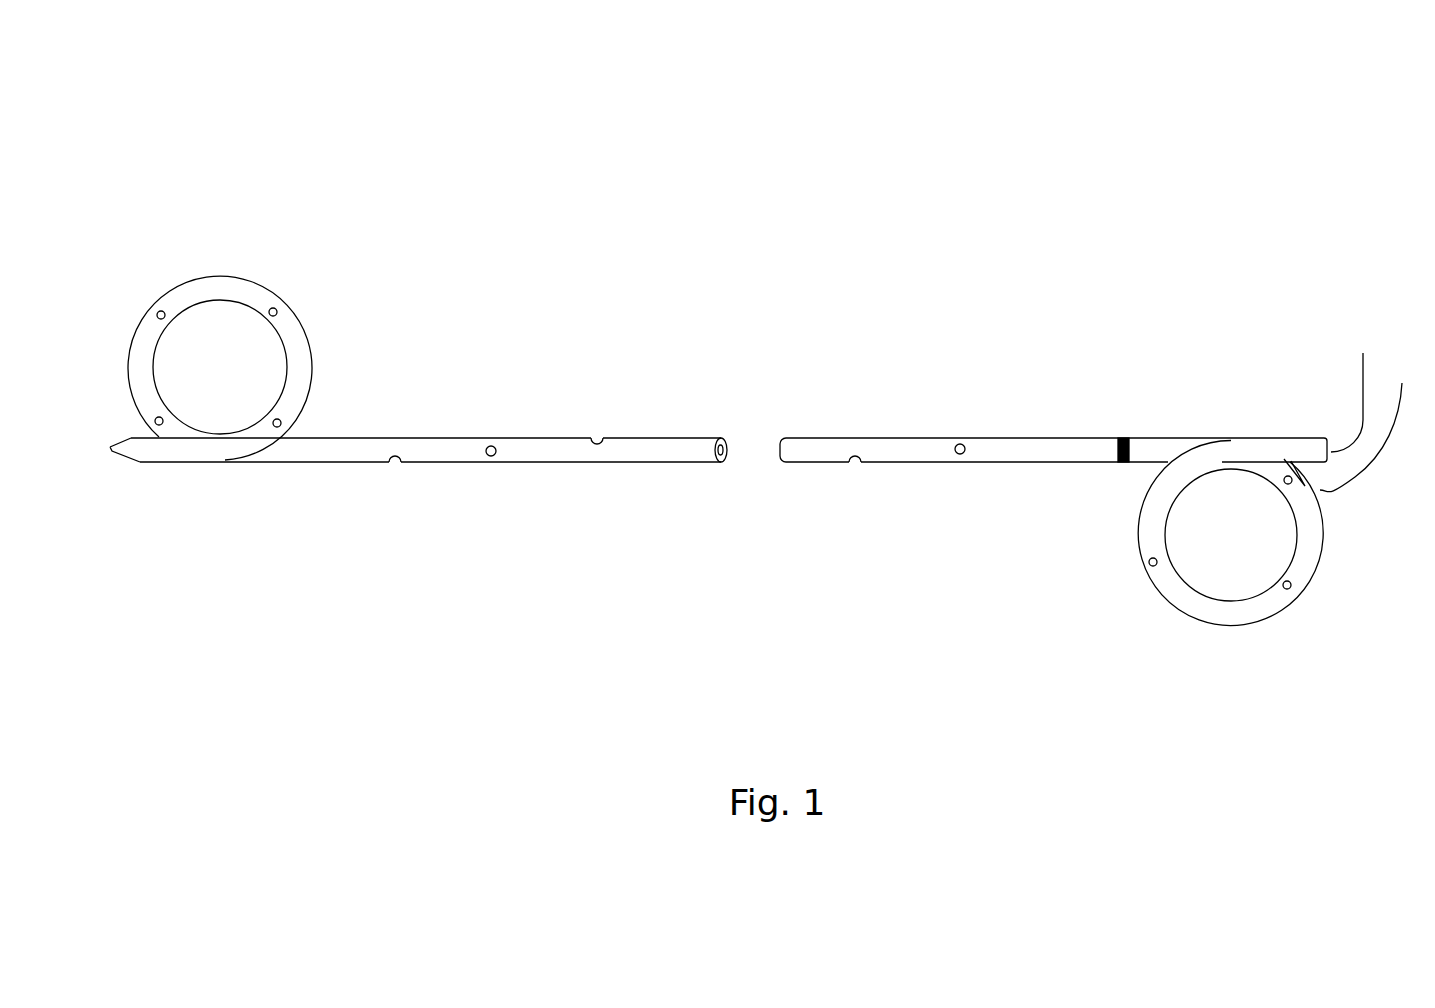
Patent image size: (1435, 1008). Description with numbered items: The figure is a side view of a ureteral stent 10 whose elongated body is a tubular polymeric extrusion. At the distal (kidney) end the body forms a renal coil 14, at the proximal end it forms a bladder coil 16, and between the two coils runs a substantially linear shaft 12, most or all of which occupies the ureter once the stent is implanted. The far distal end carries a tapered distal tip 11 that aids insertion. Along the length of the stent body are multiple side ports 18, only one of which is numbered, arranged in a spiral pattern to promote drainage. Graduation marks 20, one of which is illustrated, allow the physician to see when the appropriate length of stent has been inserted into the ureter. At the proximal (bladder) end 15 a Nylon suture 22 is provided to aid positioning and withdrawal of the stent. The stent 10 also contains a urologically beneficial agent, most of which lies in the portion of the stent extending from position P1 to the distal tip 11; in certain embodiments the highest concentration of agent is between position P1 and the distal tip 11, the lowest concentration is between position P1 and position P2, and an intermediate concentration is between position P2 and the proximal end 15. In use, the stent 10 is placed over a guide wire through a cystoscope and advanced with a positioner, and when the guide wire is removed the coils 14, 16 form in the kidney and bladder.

The stent 10 is at (756, 440).
The tapered distal tip 11 is at (122, 450).
The substantially linear shaft 12 is at (683, 447).
The renal coil 14 is at (220, 290).
The proximal end 15 is at (1323, 440).
The bladder coil 16 is at (1208, 605).
The side ports 18 is at (962, 445).
The graduation marks 20 is at (1119, 464).
The Nylon suture 22 is at (1338, 483).
The position P1 is at (308, 466).
The position P2 is at (1138, 435).